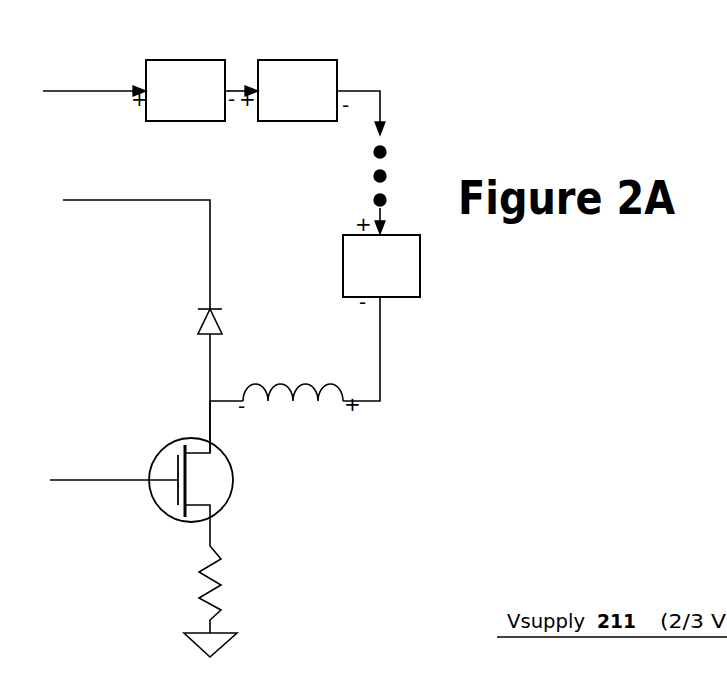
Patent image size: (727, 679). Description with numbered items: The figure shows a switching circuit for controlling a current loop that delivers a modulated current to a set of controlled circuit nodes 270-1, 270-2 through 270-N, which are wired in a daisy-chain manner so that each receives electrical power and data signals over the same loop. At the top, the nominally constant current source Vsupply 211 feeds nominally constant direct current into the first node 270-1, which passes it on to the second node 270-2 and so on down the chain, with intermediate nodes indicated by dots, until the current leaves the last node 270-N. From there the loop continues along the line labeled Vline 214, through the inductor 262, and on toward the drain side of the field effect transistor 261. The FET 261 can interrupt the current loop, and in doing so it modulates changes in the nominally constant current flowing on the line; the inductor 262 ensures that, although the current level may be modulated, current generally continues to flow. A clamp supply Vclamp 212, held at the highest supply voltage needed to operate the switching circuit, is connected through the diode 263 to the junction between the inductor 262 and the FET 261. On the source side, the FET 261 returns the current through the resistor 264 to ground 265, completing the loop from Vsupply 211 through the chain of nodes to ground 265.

The Vsupply 211 is at (94, 90).
The Vclamp 212 is at (136, 243).
The line voltage Vline 214 is at (391, 349).
The field effect transistor 261 is at (141, 473).
The inductor 262 is at (276, 410).
The diode 263 is at (188, 355).
The resistor 264 is at (187, 589).
The ground 265 is at (192, 654).
The circuit node 270-1 is at (185, 90).
The circuit node 270-2 is at (297, 90).
The circuit node 270-N is at (381, 266).